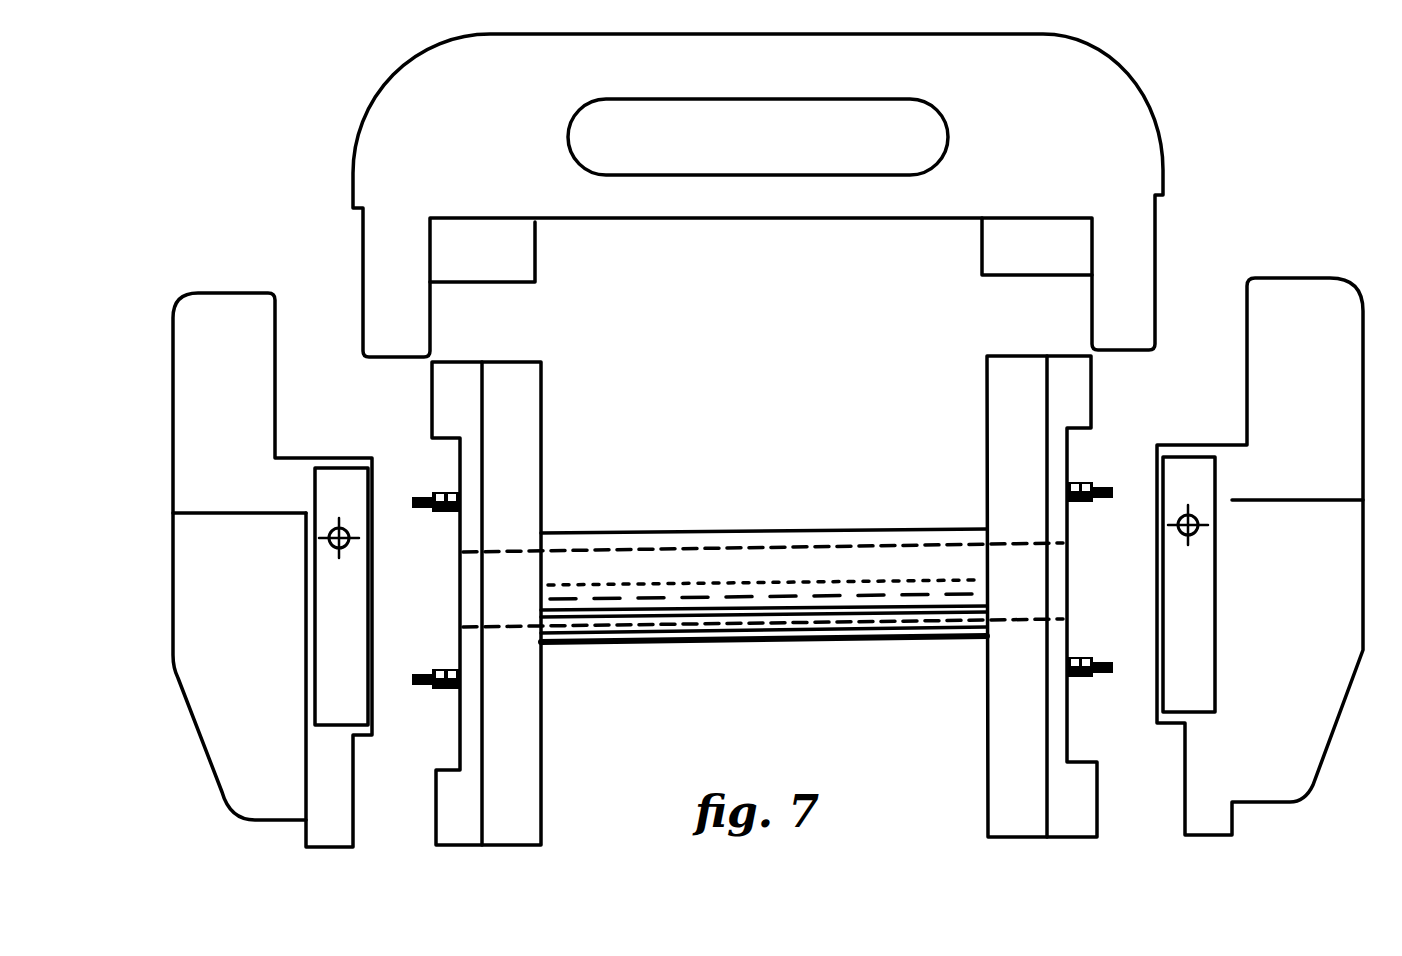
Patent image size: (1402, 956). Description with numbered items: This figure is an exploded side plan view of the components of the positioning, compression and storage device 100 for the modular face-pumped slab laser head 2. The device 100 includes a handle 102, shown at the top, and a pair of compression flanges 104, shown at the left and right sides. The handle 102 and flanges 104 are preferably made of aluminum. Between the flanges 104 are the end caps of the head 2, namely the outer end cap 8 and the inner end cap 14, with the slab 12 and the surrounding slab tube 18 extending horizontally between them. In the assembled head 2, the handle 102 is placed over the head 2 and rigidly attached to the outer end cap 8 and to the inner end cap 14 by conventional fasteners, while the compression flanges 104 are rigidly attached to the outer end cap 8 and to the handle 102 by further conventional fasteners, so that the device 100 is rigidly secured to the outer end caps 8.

The positioning compression and storage device 100 is at (783, 195).
The handle 102 is at (353, 180).
The modular face-pumped slab laser head 2 is at (826, 531).
The compression flanges 104 is at (768, 562).
The inner end cap 14 is at (762, 600).
The outer end cap 8 is at (437, 818).
The slab 12 is at (727, 567).
The slab tube 18 is at (765, 643).